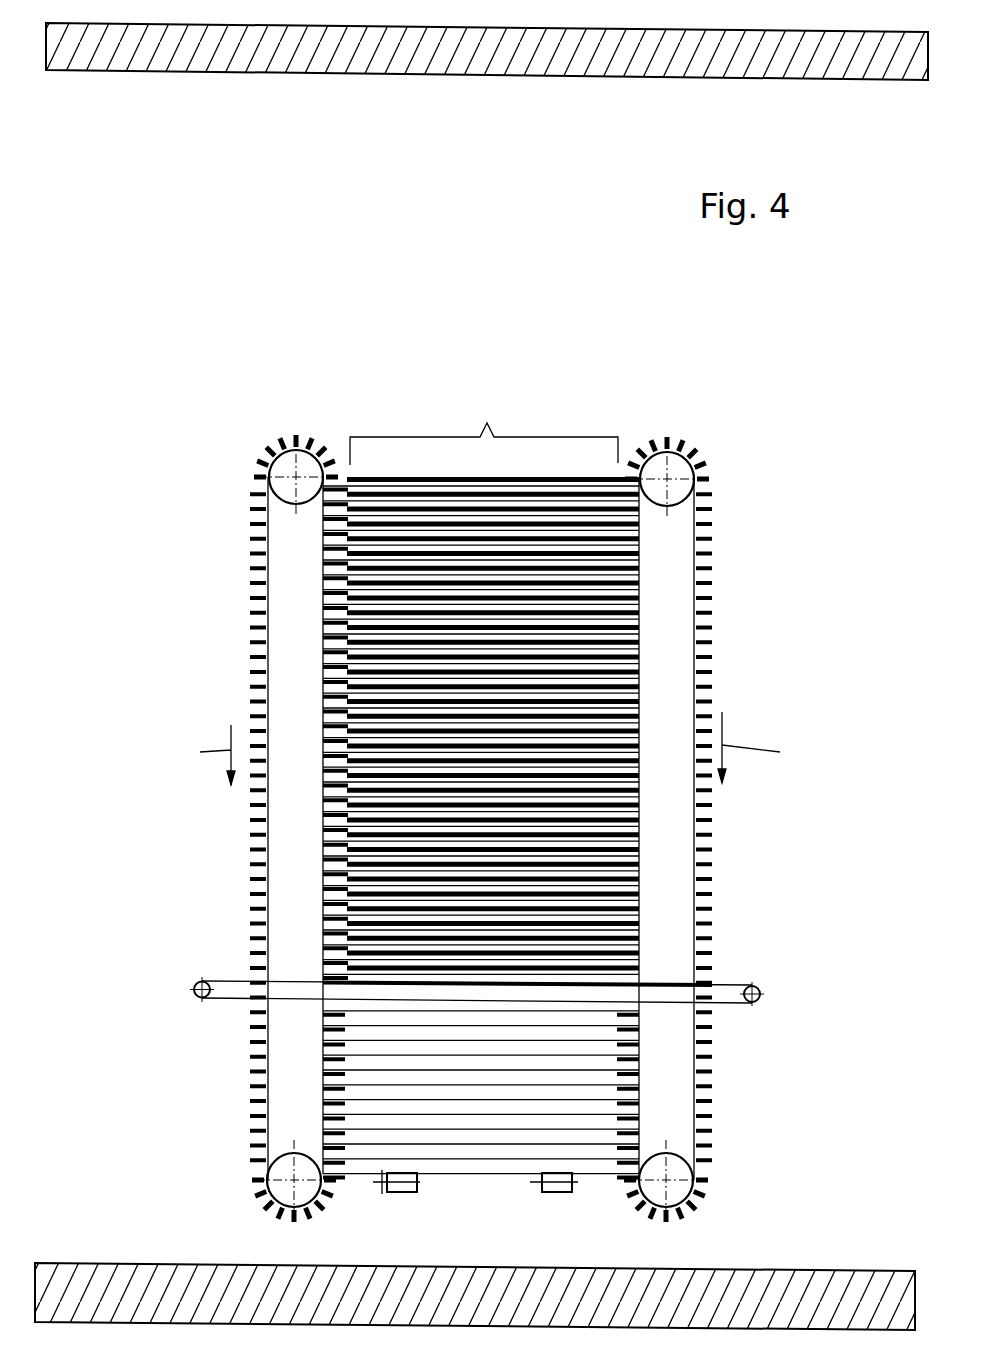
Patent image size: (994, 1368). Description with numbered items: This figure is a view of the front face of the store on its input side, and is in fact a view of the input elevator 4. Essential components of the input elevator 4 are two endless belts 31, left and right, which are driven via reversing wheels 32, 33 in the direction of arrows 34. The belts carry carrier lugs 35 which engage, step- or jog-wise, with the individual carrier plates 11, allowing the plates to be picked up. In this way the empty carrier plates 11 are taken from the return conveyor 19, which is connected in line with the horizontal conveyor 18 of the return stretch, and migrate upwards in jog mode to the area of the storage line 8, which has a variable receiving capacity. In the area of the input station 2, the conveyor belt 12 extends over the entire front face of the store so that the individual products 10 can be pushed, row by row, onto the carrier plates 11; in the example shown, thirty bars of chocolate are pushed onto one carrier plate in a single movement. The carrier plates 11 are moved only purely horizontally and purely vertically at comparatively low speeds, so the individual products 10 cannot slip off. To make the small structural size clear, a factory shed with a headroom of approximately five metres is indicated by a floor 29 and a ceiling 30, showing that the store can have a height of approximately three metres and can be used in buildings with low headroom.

The input station 2 is at (728, 957).
The input elevator 4 is at (747, 507).
The storage line 8 is at (569, 784).
The individual products 10 is at (752, 985).
The carrier plates 11 is at (580, 1117).
The conveyor belt 12 is at (732, 1003).
The horizontal conveyor 18 is at (558, 1196).
The return conveyor 19 is at (560, 1192).
The floor 29 is at (788, 1293).
The ceiling 30 is at (380, 48).
The endless belts 31 is at (707, 625).
The reversing wheels 32 is at (672, 472).
The reversing wheels 33 is at (690, 1192).
The arrows 34 is at (487, 748).
The carrier lugs 35 is at (710, 890).